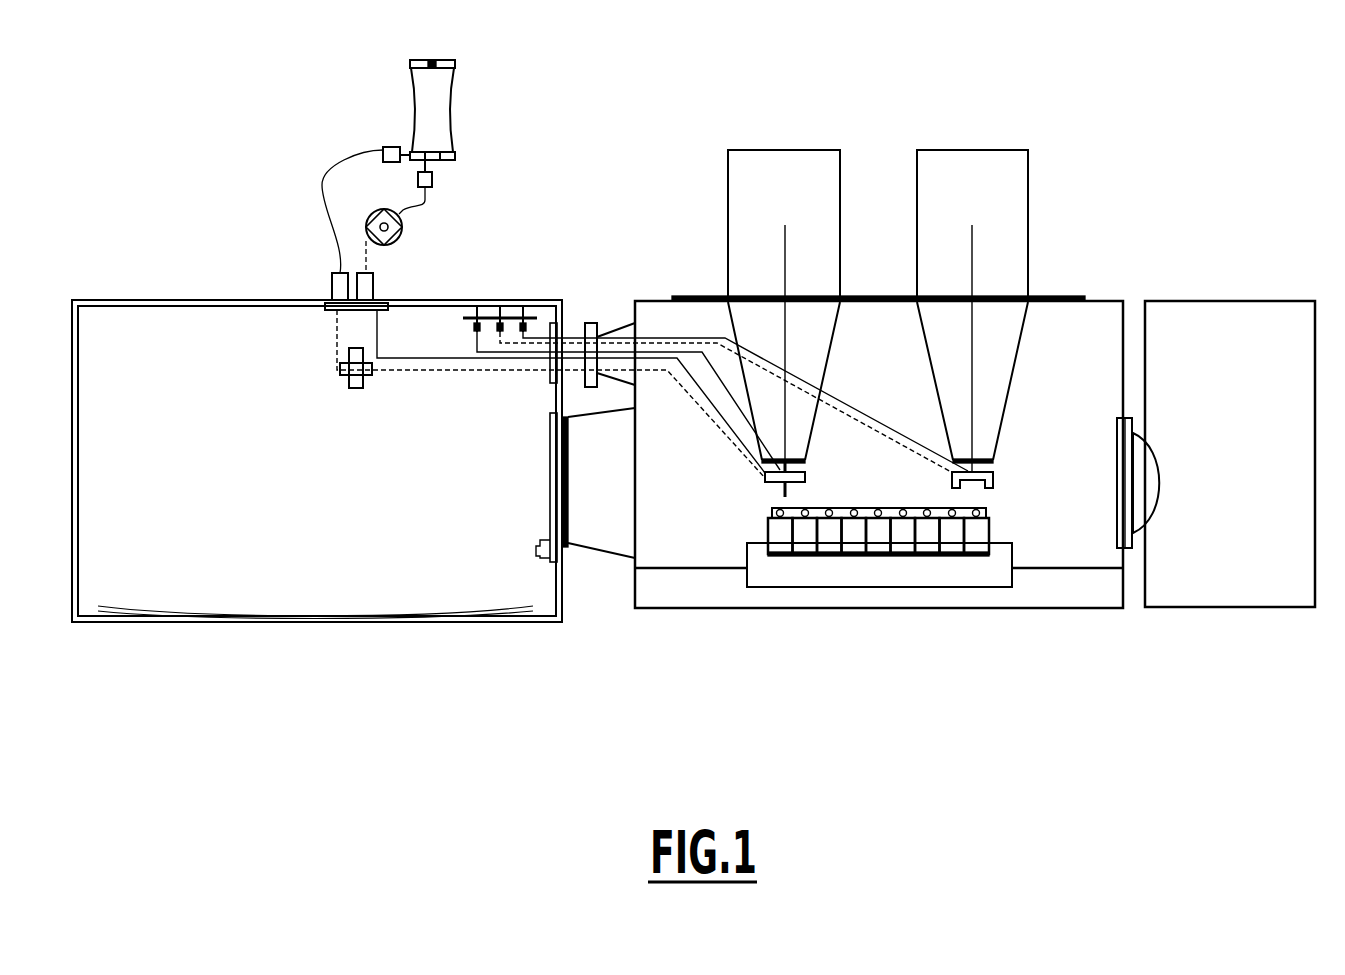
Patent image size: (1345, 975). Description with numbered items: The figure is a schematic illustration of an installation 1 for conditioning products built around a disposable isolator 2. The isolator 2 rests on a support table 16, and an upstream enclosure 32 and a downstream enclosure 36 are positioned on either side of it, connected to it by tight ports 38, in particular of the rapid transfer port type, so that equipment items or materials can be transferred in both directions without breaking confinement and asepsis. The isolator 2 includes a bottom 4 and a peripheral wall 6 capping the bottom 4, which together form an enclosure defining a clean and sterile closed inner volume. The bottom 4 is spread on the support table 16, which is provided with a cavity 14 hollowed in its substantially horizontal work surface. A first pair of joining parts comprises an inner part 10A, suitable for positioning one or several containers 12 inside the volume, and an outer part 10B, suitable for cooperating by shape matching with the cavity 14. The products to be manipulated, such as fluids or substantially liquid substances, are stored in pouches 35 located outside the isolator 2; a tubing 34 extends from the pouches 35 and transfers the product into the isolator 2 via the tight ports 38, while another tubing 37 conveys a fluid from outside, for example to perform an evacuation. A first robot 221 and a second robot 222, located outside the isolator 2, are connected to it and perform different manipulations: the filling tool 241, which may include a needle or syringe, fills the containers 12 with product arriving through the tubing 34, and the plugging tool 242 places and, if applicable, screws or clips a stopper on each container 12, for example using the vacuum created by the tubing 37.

The installation 1 is at (1148, 723).
The disposable isolator 2 is at (820, 641).
The bottom 4 is at (709, 554).
The peripheral wall 6 is at (1103, 297).
The inner part 10A is at (1012, 553).
The outer part 10B is at (778, 575).
The containers 12 is at (925, 507).
The cavity 14 is at (967, 573).
The support table 16 is at (1080, 592).
The upstream enclosure 32 is at (247, 635).
The tubing 34 is at (435, 358).
The pouches 35 is at (455, 83).
The downstream enclosure 36 is at (1205, 285).
The tubing 37 is at (537, 338).
The tight ports 38 is at (375, 278).
The first robot 221 is at (800, 150).
The second robot 222 is at (993, 150).
The filling tool 241 is at (800, 483).
The plugging tool 242 is at (993, 480).